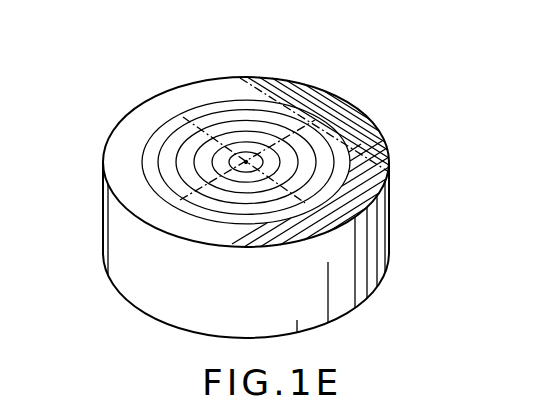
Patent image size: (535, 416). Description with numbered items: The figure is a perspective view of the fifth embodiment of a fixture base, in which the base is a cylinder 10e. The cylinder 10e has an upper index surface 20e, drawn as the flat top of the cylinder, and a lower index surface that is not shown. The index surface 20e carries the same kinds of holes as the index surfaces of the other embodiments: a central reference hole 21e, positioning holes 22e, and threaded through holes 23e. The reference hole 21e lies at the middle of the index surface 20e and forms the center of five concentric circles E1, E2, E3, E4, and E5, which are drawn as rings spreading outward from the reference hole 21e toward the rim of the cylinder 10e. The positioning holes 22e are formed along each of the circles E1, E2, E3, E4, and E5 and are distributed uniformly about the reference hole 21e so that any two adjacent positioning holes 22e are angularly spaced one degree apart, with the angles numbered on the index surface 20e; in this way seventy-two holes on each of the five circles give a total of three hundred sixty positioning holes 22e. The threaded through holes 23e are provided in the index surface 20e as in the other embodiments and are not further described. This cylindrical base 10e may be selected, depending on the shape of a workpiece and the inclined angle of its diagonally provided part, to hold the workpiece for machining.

The cylinder 10e is at (337, 86).
The upper index surface 20e is at (283, 90).
The reference hole 21e is at (245, 160).
The positioning holes 22e is at (276, 102).
The threaded through holes 23e is at (368, 145).
The first concentric circle E1 is at (236, 156).
The second concentric circle E2 is at (218, 152).
The third concentric circle E3 is at (198, 150).
The fourth concentric circle E4 is at (176, 164).
The fifth concentric circle E5 is at (169, 188).